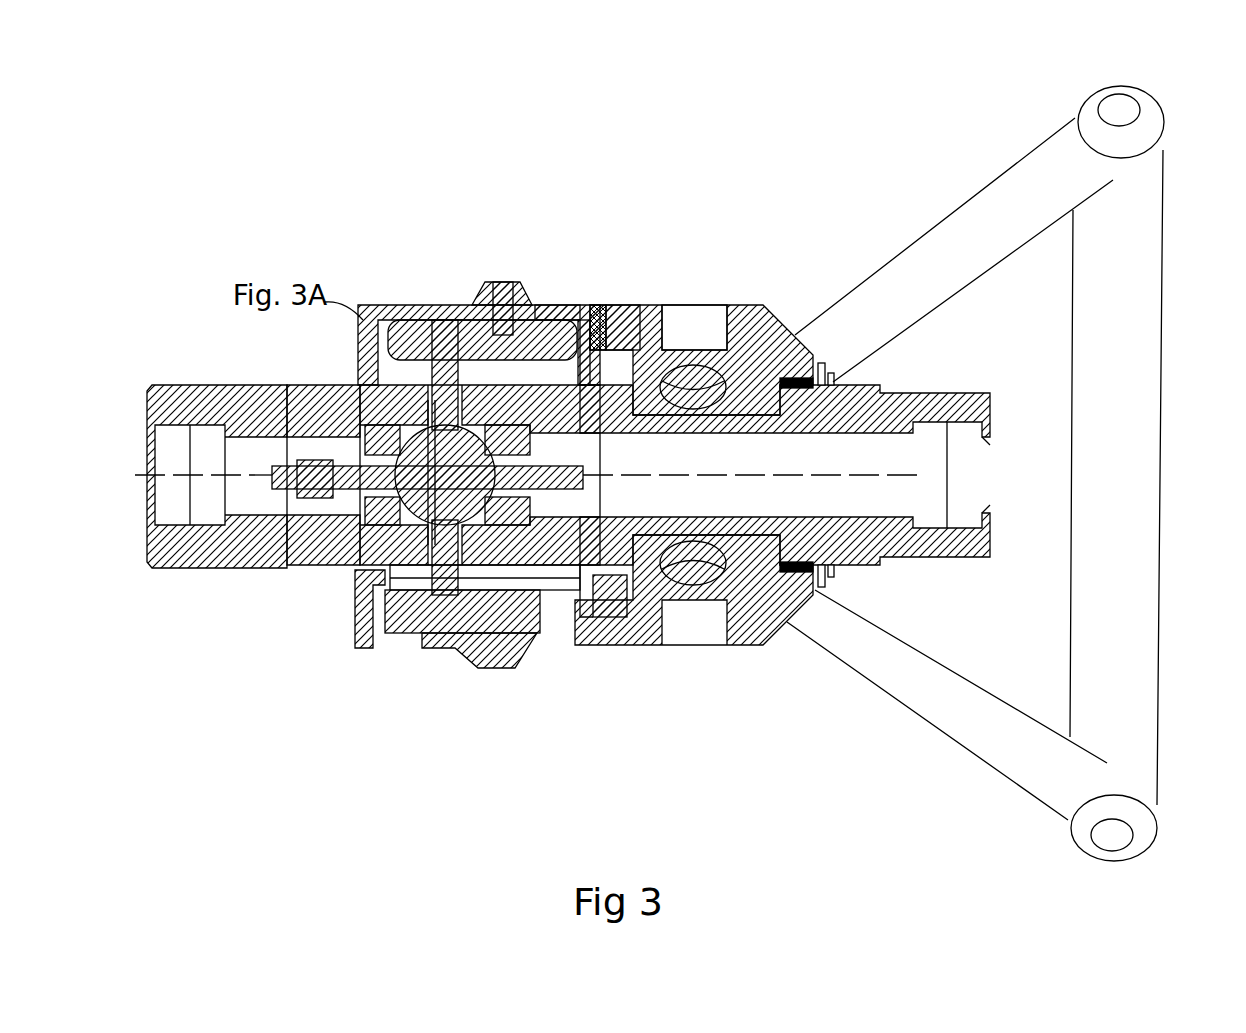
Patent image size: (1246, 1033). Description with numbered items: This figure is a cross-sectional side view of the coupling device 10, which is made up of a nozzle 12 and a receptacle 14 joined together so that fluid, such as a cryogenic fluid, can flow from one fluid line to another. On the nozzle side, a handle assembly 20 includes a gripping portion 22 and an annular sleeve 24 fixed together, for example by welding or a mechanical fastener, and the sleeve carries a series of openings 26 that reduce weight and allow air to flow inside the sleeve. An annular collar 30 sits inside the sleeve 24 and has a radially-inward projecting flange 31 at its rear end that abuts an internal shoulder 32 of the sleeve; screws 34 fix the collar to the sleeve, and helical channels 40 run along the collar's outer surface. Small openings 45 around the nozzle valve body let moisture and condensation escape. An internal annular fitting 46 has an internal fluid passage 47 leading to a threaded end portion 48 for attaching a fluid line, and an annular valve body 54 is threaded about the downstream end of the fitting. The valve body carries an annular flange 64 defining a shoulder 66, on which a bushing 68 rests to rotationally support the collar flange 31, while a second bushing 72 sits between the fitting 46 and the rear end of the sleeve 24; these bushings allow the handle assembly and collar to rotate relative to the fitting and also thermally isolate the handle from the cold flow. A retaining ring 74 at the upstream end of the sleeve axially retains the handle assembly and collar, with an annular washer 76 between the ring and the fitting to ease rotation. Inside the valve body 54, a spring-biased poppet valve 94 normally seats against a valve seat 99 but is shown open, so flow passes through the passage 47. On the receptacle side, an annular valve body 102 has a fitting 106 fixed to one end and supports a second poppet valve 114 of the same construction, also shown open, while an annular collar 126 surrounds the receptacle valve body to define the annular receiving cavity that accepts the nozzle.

The coupling device 10 is at (735, 176).
The nozzle 12 is at (652, 548).
The receptacle 14 is at (455, 276).
The handle assembly 20 is at (1178, 102).
The gripping portion 22 is at (1160, 478).
The annular sleeve 24 is at (745, 650).
The openings 26 is at (697, 628).
The annular collar 30 is at (452, 390).
The radially-inward projecting flange 31 is at (633, 365).
The internal shoulder 32 is at (655, 316).
The screws 34 is at (602, 320).
The helical channels 40 is at (530, 300).
The small openings 45 is at (563, 330).
The internal annular fitting 46 is at (888, 405).
The internal fluid passage 47 is at (775, 475).
The threaded end portion 48 is at (982, 437).
The annular valve body 54 is at (590, 630).
The annular flange 64 is at (588, 327).
The shoulder 66 is at (620, 320).
The bushing 68 is at (612, 400).
The second bushing 72 is at (795, 345).
The retaining ring 74 is at (838, 573).
The annular washer 76 is at (825, 588).
The poppet valve 94 is at (487, 555).
The valve seat 99 is at (460, 560).
The annular valve body 102 is at (420, 565).
The fitting 106 is at (237, 560).
The poppet valve 114 is at (340, 548).
The annular collar 126 is at (455, 648).